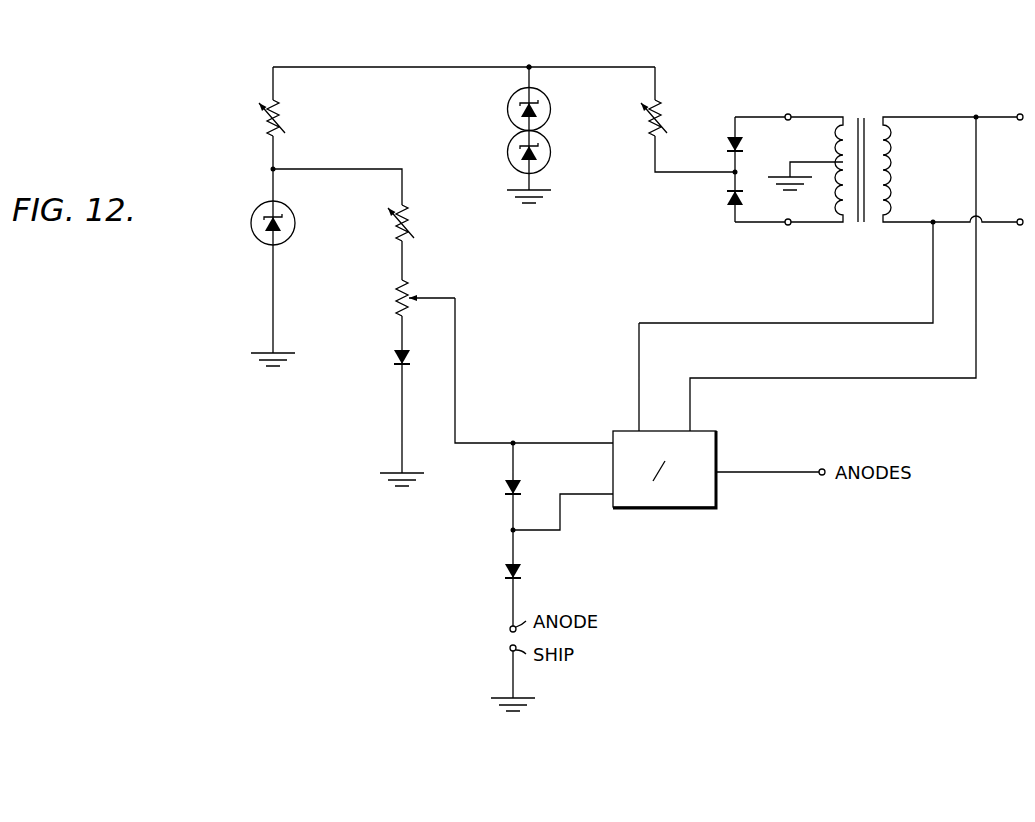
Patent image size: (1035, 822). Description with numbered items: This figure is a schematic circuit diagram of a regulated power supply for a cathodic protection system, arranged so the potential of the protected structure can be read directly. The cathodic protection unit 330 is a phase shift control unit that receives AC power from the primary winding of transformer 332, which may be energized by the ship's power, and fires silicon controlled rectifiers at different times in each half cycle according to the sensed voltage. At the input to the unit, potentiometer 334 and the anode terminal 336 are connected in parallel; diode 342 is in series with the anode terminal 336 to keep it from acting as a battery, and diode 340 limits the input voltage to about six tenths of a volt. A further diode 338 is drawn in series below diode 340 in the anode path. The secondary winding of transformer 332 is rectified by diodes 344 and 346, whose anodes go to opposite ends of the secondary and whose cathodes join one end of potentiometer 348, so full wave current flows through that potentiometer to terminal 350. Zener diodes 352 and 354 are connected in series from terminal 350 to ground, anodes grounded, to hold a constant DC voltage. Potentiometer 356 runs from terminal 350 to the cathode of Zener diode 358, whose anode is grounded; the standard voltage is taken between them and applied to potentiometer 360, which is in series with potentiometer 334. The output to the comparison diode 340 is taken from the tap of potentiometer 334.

The cathodic protection unit 330 is at (714, 500).
The transformer 332 is at (867, 100).
The potentiometer 334 is at (394, 296).
The anode terminal 336 is at (508, 629).
The diode 338 is at (507, 577).
The diode 340 is at (504, 484).
The diode 342 is at (394, 360).
The diode 344 is at (740, 142).
The diode 346 is at (728, 198).
The potentiometer 348 is at (663, 112).
The terminal 350 is at (529, 67).
The Zener diode 352 is at (507, 107).
The Zener diode 354 is at (507, 152).
The potentiometer 356 is at (286, 113).
The Zener diode 358 is at (295, 210).
The potentiometer 360 is at (409, 210).